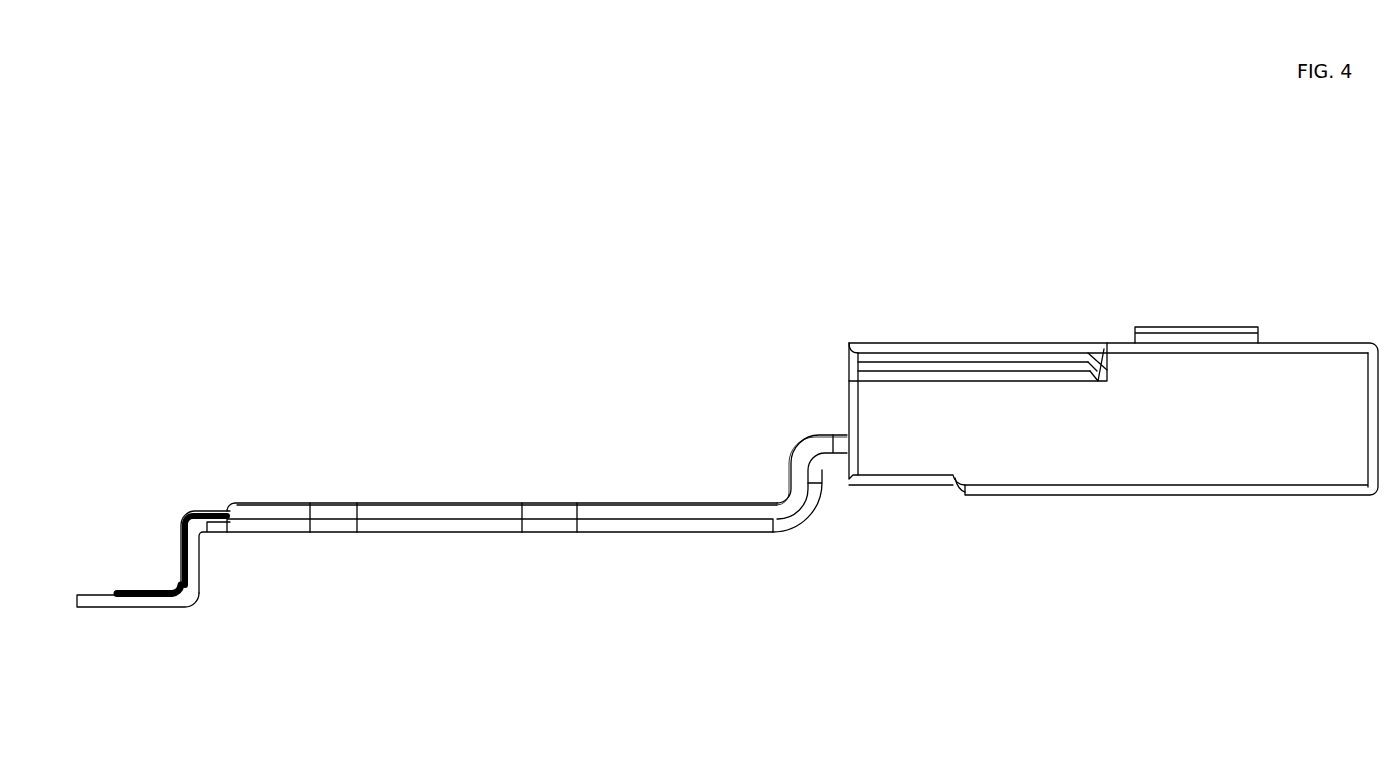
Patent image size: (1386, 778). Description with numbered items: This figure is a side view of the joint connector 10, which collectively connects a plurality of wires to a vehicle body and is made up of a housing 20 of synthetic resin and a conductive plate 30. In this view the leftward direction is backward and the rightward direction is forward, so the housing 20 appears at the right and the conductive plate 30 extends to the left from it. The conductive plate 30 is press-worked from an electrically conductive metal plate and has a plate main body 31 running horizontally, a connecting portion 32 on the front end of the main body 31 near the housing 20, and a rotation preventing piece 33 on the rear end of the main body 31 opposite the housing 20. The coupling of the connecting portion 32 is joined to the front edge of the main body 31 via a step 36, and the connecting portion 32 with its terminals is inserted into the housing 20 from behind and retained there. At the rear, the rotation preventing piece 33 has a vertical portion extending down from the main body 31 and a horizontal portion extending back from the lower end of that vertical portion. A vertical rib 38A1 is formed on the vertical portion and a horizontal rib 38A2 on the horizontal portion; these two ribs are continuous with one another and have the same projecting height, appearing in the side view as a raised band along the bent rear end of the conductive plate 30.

The joint connector 10 is at (777, 280).
The housing 20 is at (1074, 293).
The conductive plate 30 is at (554, 395).
The plate main body 31 is at (500, 533).
The connecting portion 32 is at (843, 435).
The rotation preventing piece 33 is at (152, 607).
The step 36 is at (822, 478).
The vertical rib 38A1 is at (178, 560).
The horizontal rib 38A2 is at (148, 585).